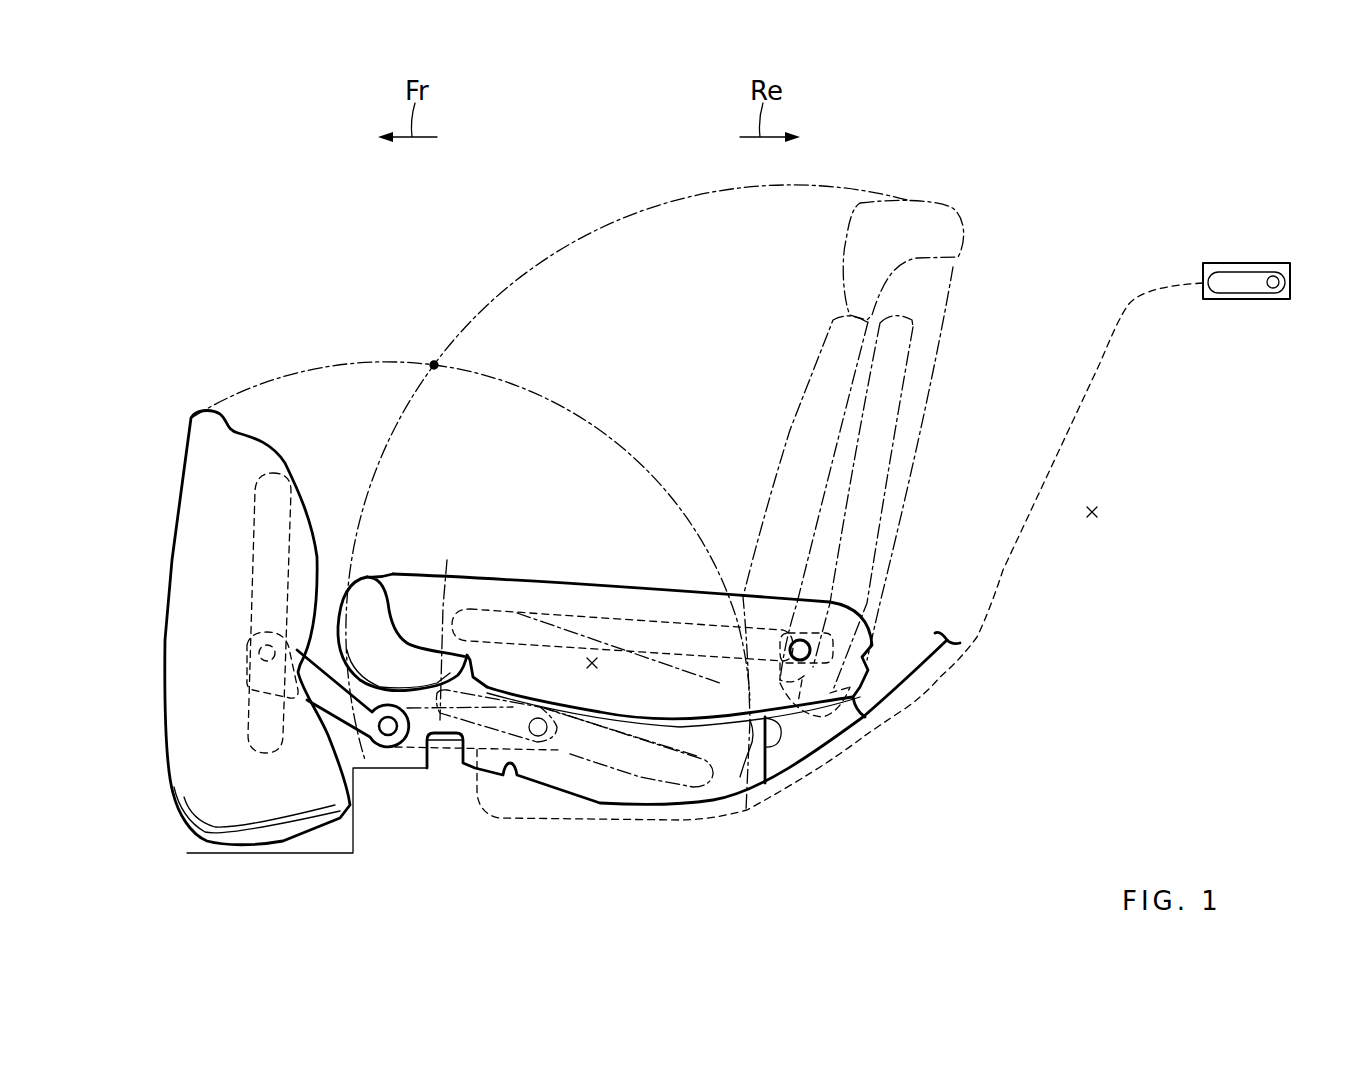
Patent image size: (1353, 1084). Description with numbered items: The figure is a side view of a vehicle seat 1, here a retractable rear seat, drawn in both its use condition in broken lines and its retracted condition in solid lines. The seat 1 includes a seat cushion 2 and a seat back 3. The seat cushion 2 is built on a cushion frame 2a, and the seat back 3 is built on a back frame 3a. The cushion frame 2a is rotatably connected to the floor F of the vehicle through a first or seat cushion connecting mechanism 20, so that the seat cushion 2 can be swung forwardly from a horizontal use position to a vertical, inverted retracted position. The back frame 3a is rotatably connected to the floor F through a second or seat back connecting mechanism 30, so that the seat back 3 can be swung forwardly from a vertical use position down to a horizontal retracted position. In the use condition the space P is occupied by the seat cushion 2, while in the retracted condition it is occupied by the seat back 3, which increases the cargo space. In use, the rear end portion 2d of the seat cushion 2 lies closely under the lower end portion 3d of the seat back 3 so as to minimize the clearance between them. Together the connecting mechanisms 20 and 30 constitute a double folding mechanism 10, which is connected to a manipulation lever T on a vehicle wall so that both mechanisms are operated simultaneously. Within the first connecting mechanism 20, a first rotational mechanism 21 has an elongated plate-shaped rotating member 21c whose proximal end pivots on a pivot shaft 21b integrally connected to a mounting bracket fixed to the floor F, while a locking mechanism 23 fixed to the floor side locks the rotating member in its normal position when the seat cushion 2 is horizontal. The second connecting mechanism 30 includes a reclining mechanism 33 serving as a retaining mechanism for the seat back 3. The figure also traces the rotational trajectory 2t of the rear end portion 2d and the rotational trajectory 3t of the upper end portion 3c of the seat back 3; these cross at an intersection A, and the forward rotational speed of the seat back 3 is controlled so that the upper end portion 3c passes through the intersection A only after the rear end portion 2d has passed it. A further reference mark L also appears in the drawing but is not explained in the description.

The seat 1 is at (453, 288).
The seat cushion 2 is at (414, 606).
The cushion frame 2a is at (262, 716).
The rear end portion 2d is at (193, 413).
The rotational trajectory 2t is at (594, 422).
The seat back 3 is at (675, 615).
The back frame 3a is at (837, 545).
The upper end portion 3c is at (920, 202).
The lower end portion 3d is at (773, 680).
The rotational trajectory 3t is at (567, 247).
The double folding mechanism 10 is at (713, 872).
The first or seat cushion connecting mechanism 20 is at (578, 756).
The first rotational mechanism 21 is at (360, 754).
The pivot shaft 21b is at (388, 737).
The rotating member 21c is at (330, 700).
The locking mechanism 23 is at (445, 740).
The second or seat back connecting mechanism 30 is at (730, 763).
The reclining mechanism 33 is at (820, 680).
The intersection A is at (433, 361).
The floor F is at (513, 778).
The reference line point L is at (1098, 512).
The space P is at (592, 660).
The manipulation lever T is at (1240, 290).